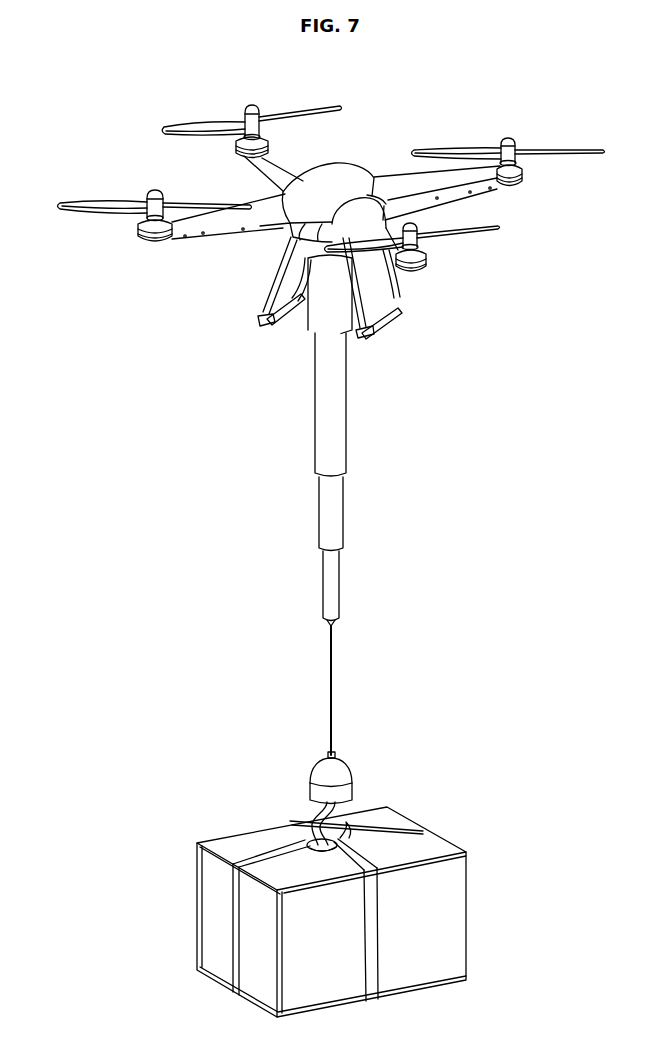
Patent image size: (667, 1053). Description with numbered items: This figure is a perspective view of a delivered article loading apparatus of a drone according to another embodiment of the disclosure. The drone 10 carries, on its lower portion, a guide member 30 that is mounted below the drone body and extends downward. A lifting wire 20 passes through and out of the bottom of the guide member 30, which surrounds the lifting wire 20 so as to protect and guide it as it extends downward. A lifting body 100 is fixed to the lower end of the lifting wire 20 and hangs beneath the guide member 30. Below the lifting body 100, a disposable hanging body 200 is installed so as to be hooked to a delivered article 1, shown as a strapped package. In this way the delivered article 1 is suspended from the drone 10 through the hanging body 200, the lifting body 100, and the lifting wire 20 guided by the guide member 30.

The drone 10 is at (372, 127).
The guide member 30 is at (357, 438).
The lifting wire 20 is at (333, 686).
The lifting body 100 is at (358, 762).
The disposable hanging body 200 is at (307, 812).
The delivered article 1 is at (443, 923).